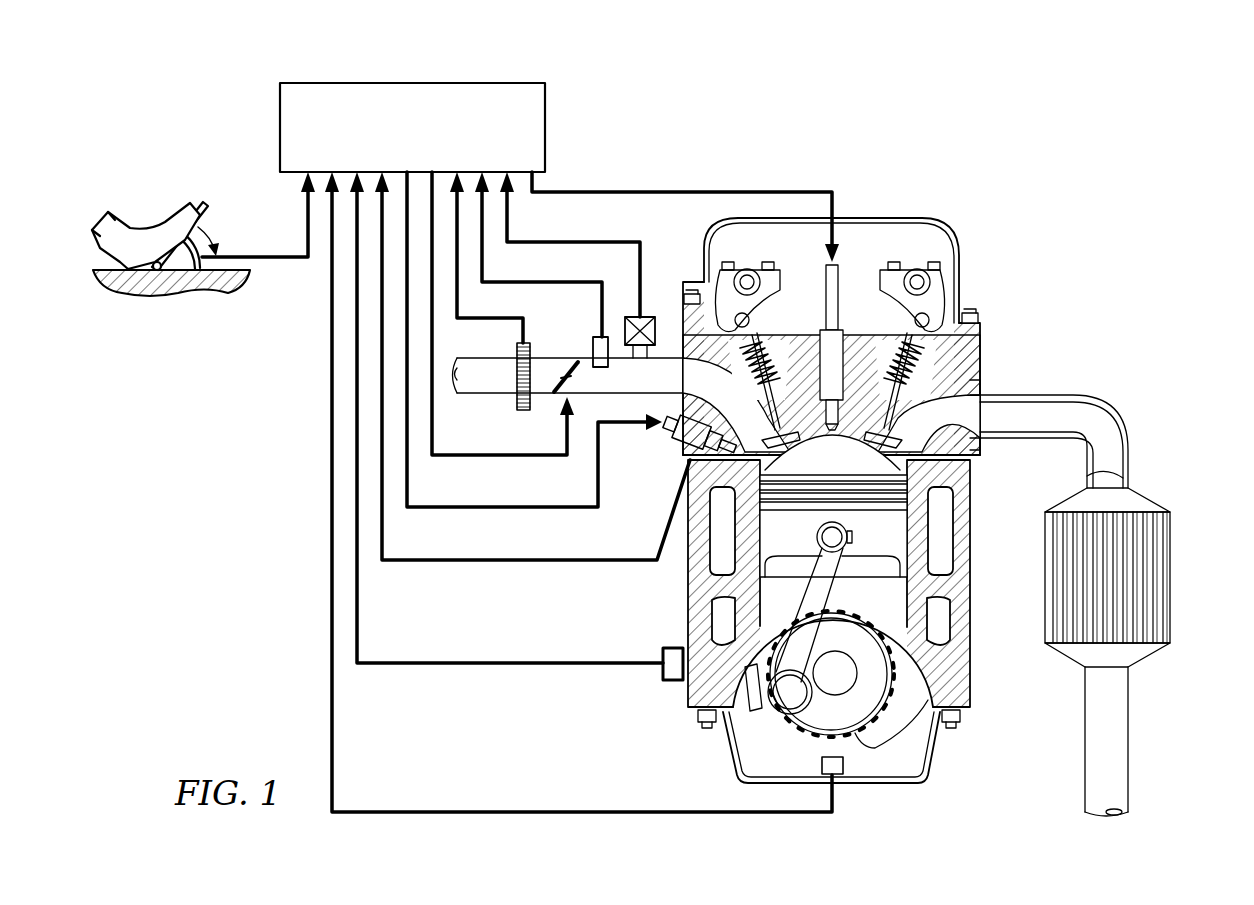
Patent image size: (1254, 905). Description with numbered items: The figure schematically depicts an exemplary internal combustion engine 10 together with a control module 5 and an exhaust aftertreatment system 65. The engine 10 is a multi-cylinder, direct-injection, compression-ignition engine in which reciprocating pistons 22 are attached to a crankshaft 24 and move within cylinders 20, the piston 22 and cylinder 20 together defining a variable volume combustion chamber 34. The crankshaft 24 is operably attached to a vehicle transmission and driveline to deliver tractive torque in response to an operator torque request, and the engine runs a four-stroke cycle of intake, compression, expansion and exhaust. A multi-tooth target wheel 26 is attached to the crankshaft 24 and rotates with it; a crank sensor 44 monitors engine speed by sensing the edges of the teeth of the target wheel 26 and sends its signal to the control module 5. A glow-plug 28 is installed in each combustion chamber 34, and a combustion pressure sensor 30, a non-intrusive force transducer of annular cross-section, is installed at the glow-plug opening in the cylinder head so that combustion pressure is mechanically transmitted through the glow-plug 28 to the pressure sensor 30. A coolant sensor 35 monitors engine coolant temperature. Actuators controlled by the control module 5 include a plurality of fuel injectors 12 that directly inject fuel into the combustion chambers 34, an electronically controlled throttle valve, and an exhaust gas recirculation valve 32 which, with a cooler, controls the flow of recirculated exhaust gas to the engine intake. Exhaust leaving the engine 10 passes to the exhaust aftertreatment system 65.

The control module 5 is at (530, 90).
The internal combustion engine 10 is at (843, 506).
The fuel injector 12 is at (838, 262).
The cylinder 20 is at (965, 455).
The piston 22 is at (806, 543).
The crankshaft 24 is at (905, 677).
The multi-tooth target wheel 26 is at (872, 690).
The glow-plug 28 is at (622, 424).
The combustion pressure sensor 30 is at (625, 560).
The exhaust gas recirculation valve 32 is at (645, 317).
The combustion chamber 34 is at (845, 469).
The coolant sensor 35 is at (625, 663).
The crank sensor 44 is at (845, 770).
The exhaust aftertreatment system 65 is at (1147, 505).